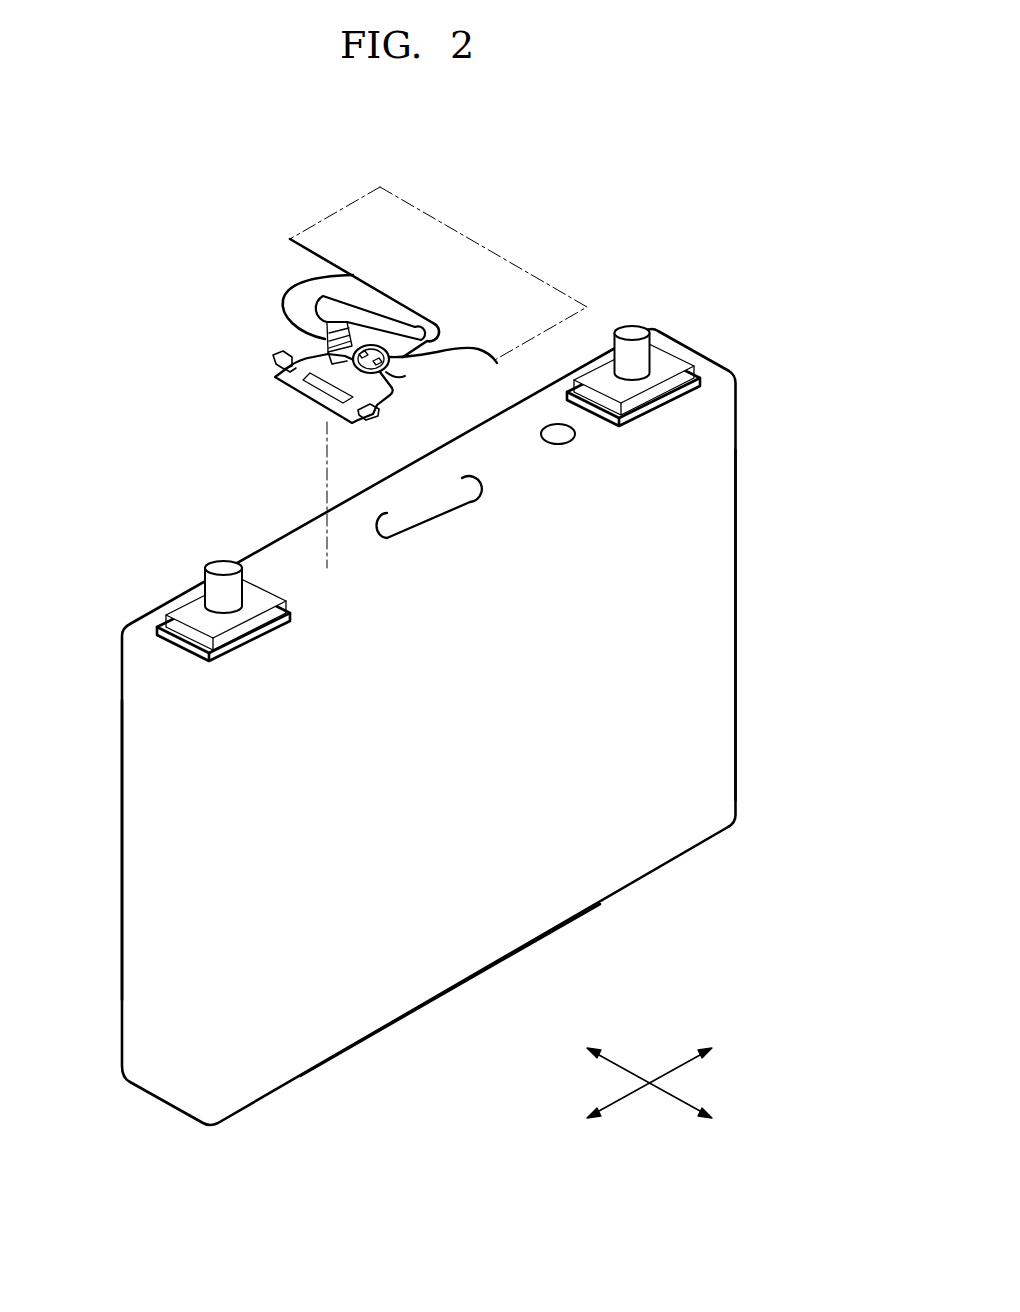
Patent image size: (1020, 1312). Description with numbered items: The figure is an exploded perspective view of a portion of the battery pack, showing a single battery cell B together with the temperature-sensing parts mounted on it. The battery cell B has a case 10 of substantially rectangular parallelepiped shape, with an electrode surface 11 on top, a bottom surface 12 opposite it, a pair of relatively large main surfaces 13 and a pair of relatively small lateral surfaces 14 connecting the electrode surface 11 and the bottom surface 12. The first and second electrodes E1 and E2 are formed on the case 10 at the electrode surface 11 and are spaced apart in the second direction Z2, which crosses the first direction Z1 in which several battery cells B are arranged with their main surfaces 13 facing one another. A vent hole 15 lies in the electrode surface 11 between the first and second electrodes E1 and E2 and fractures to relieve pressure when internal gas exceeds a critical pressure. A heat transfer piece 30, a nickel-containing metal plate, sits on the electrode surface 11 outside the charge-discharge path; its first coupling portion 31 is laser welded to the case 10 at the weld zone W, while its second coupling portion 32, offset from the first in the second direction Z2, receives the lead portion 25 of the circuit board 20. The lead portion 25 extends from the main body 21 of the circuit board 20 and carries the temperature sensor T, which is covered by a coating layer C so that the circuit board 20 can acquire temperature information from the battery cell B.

The case 10 is at (720, 443).
The electrode surface 11 is at (520, 465).
The bottom surface 12 is at (643, 880).
The main surface 13 is at (698, 683).
The lateral surface 14 is at (153, 885).
The vent hole 15 is at (428, 520).
The circuit board 20 is at (272, 154).
The main body 21 is at (333, 220).
The lead portion 25 is at (297, 287).
The heat transfer piece 30 is at (242, 287).
The first coupling portion 31 is at (289, 393).
The second coupling portion 32 is at (337, 367).
The first electrode E1 is at (217, 567).
The second electrode E2 is at (628, 327).
The coating layer C is at (397, 363).
The temperature sensor T is at (377, 368).
The weld zone W is at (323, 387).
The battery cell B is at (114, 1107).
The first direction Z1 is at (667, 1093).
The second direction Z2 is at (667, 1074).